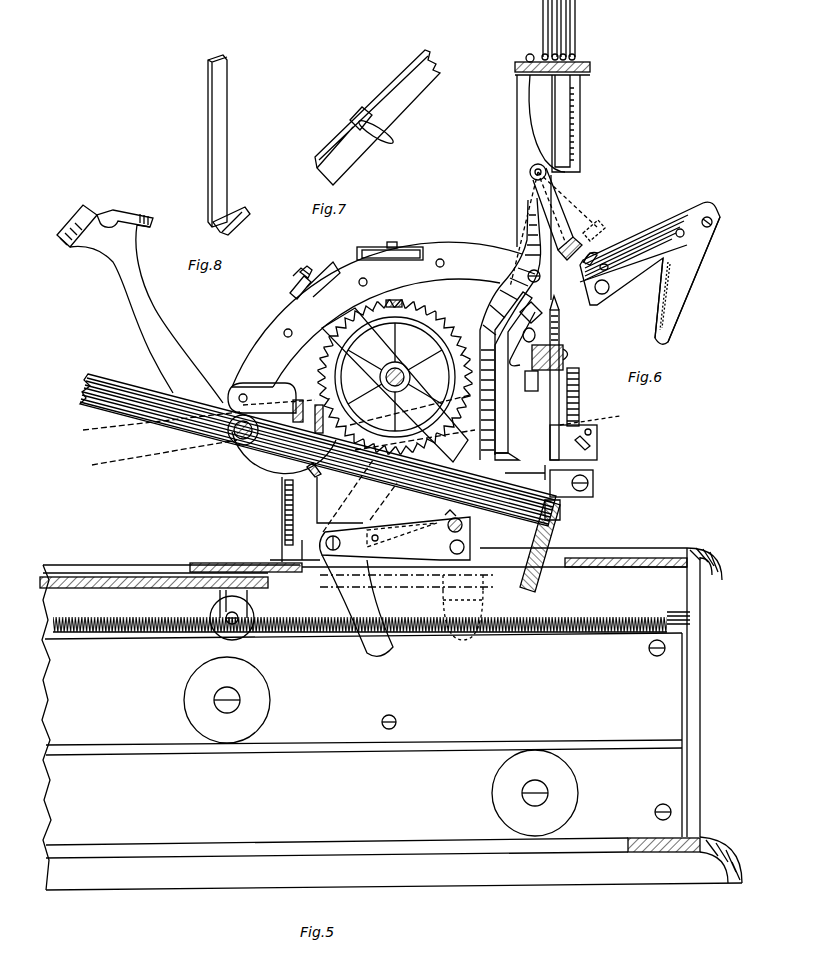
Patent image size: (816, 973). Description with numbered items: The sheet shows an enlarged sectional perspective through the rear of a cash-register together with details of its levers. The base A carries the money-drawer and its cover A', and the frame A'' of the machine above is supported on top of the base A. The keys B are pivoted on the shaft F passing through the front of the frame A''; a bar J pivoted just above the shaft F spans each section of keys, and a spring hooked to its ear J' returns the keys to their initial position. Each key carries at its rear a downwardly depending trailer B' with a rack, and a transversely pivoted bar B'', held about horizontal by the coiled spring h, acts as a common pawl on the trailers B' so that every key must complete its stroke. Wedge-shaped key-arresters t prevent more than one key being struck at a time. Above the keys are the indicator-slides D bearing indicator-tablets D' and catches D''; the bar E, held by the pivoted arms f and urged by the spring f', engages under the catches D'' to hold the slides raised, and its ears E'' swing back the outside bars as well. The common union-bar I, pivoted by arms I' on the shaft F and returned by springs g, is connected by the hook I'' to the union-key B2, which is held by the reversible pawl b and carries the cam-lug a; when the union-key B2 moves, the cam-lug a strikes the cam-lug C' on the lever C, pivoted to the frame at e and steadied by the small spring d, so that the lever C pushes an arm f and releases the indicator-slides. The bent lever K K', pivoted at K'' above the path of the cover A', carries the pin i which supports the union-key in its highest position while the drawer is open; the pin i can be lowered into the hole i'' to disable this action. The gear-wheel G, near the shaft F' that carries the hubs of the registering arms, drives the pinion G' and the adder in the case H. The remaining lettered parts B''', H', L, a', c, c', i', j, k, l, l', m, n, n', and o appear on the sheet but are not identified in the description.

In FIG. 5, the base A is at (392, 719).
In FIG. 5, the drawer cover A' is at (363, 566).
In FIG. 5, the frame A'' is at (391, 368).
In FIG. 5, the keys B is at (140, 304).
In FIG. 5, the trailer portion B' is at (542, 546).
In FIG. 5, the common pawl bar B'' is at (586, 483).
In FIG. 5, the adjusting rod B''' is at (590, 416).
In FIG. 5, the union-key B2 is at (175, 416).
In FIG. 7, the union-key B2 is at (377, 117).
In FIG. 5, the lever C is at (513, 372).
In FIG. 8, the lever C is at (225, 141).
In FIG. 5, the cam-lug C' is at (512, 453).
In FIG. 8, the cam-lug C' is at (237, 209).
In FIG. 5, the indicator-slides D is at (554, 257).
In FIG. 5, the indicator-tablets D' is at (567, 30).
In FIG. 5, the catch D'' is at (559, 345).
In FIG. 5, the detaining bar E is at (570, 255).
In FIG. 5, the projecting ears E'' is at (562, 229).
In FIG. 5, the shaft F is at (235, 442).
In FIG. 5, the register shaft F' is at (398, 385).
In FIG. 5, the gear-wheel G is at (395, 370).
In FIG. 5, the pinion G' is at (408, 295).
In FIG. 5, the adder case H is at (390, 243).
In FIG. 5, the screw H' is at (290, 283).
In FIG. 5, the union-bar I is at (304, 402).
In FIG. 5, the arms I' is at (284, 457).
In FIG. 5, the hook I'' is at (322, 444).
In FIG. 5, the transverse bar J is at (279, 388).
In FIG. 5, the ear J' is at (262, 388).
In FIG. 5, the lever main portion K is at (395, 510).
In FIG. 6, the lever main portion K is at (650, 273).
In FIG. 5, the lever arm K' is at (357, 605).
In FIG. 6, the lever arm K' is at (687, 279).
In FIG. 5, the pivot K'' is at (344, 526).
In FIG. 6, the pivot K'' is at (723, 213).
In FIG. 5, the spring rail L is at (296, 636).
In FIG. 7, the cam-lug a is at (382, 132).
In FIG. 5, the cam a' is at (454, 565).
In FIG. 5, the reversible pawl b is at (592, 444).
In FIG. 5, the spring clip c is at (515, 339).
In FIG. 5, the clip block c' is at (537, 306).
In FIG. 5, the spring d is at (525, 385).
In FIG. 5, the pivot e is at (528, 275).
In FIG. 5, the arms f is at (556, 207).
In FIG. 5, the spring f' is at (531, 123).
In FIG. 5, the springs g is at (285, 500).
In FIG. 5, the coiled spring h is at (580, 404).
In FIG. 5, the pin i is at (468, 520).
In FIG. 6, the pin i is at (608, 239).
In FIG. 5, the roller lug i' is at (443, 522).
In FIG. 6, the roller lug i' is at (597, 244).
In FIG. 5, the hole i'' is at (469, 542).
In FIG. 6, the hole i'' is at (613, 282).
In FIG. 5, the cam j is at (252, 608).
In FIG. 5, the wheel k is at (262, 698).
In FIG. 5, the rod l is at (678, 606).
In FIG. 5, the spring l' is at (360, 611).
In FIG. 5, the stop m is at (525, 468).
In FIG. 5, the lug n is at (382, 240).
In FIG. 5, the lug n' is at (323, 271).
In FIG. 6, the hole o is at (608, 266).
In FIG. 5, the key-arrester t is at (560, 510).